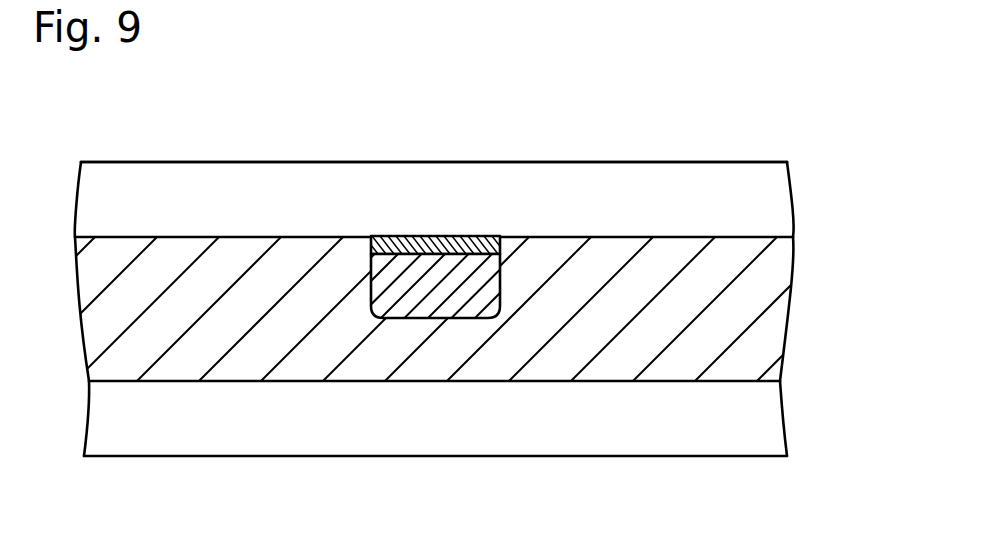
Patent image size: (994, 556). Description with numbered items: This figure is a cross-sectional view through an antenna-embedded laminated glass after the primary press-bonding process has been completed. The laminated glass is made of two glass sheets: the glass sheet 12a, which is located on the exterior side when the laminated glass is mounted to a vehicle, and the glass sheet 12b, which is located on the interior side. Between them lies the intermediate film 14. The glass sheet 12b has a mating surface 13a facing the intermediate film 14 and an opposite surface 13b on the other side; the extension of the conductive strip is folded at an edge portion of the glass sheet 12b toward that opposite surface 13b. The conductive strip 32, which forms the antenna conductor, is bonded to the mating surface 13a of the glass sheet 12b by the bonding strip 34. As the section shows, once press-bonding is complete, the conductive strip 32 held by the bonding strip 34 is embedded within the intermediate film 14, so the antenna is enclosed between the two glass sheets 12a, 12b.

The glass sheet 12a is at (770, 417).
The glass sheet 12b is at (767, 198).
The mating surface 13a is at (252, 237).
The opposite surface 13b is at (312, 162).
The intermediate film 14 is at (767, 307).
The conductive strip 32 is at (427, 271).
The bonding strip 34 is at (483, 237).